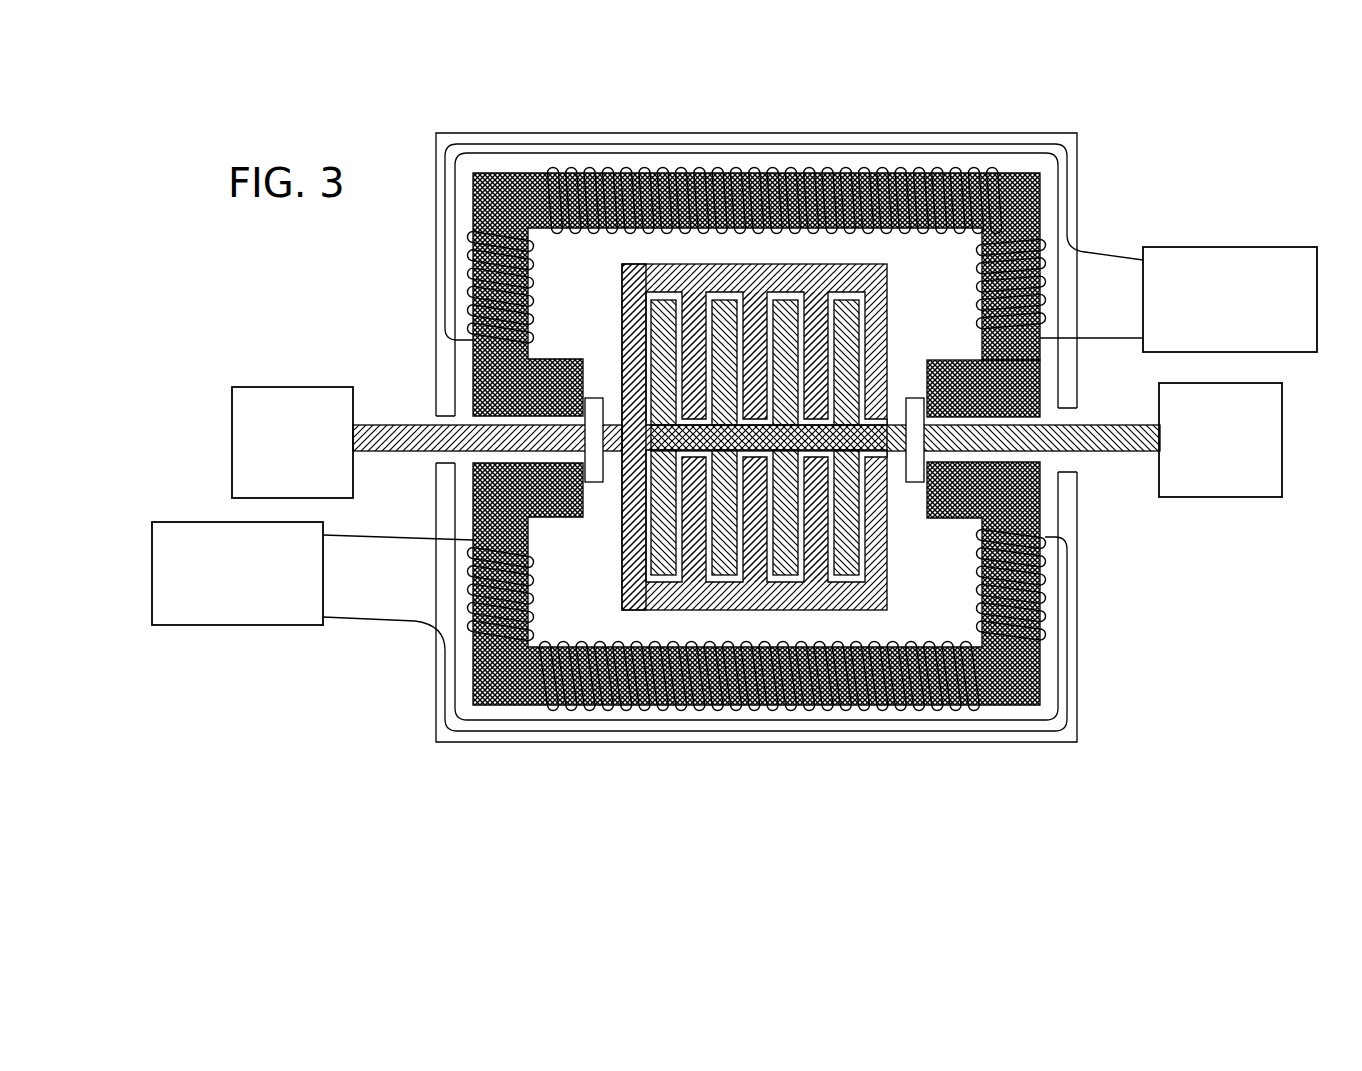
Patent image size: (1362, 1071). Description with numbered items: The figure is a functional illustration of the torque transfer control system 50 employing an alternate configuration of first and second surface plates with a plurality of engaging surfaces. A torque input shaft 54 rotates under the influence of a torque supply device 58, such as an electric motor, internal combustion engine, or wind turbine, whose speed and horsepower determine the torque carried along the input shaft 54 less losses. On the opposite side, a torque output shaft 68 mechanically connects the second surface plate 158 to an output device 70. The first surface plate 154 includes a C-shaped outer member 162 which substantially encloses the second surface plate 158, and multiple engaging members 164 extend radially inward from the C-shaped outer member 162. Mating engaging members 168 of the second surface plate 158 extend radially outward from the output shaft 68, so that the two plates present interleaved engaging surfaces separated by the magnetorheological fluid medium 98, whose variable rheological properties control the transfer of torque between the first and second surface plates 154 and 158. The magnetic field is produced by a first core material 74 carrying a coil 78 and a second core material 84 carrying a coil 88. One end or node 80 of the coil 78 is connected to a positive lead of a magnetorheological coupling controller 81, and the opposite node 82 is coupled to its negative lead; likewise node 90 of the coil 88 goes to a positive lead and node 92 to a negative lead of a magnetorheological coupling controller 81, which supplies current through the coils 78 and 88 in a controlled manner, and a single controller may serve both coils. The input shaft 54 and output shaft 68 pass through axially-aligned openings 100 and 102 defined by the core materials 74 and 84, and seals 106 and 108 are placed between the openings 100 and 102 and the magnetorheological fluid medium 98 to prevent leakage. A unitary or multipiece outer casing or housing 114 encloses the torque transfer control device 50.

The torque transfer control system 50 is at (1120, 85).
The torque input shaft 54 is at (382, 422).
The torque supply device 58 is at (293, 383).
The torque output shaft 68 is at (1095, 455).
The output device 70 is at (1283, 438).
The first core material 74 is at (473, 208).
The coil 78 is at (468, 270).
The node 80 is at (1108, 252).
The magnetorheological coupling controller 81 is at (238, 627).
The node 82 is at (1104, 336).
The second core material 84 is at (498, 705).
The coil 88 is at (593, 705).
The node 90 is at (398, 540).
The node 92 is at (372, 623).
The magnetorheological fluid medium 98 is at (547, 558).
The opening 100 is at (473, 482).
The opening 102 is at (1037, 402).
The seal 106 is at (593, 397).
The seal 108 is at (917, 396).
The outer casing or housing 114 is at (435, 180).
The first surface plate 154 is at (833, 268).
The second surface plate 158 is at (662, 298).
The C-shaped outer member 162 is at (718, 296).
The engaging members 164 is at (818, 318).
The mating engaging members 168 is at (852, 298).